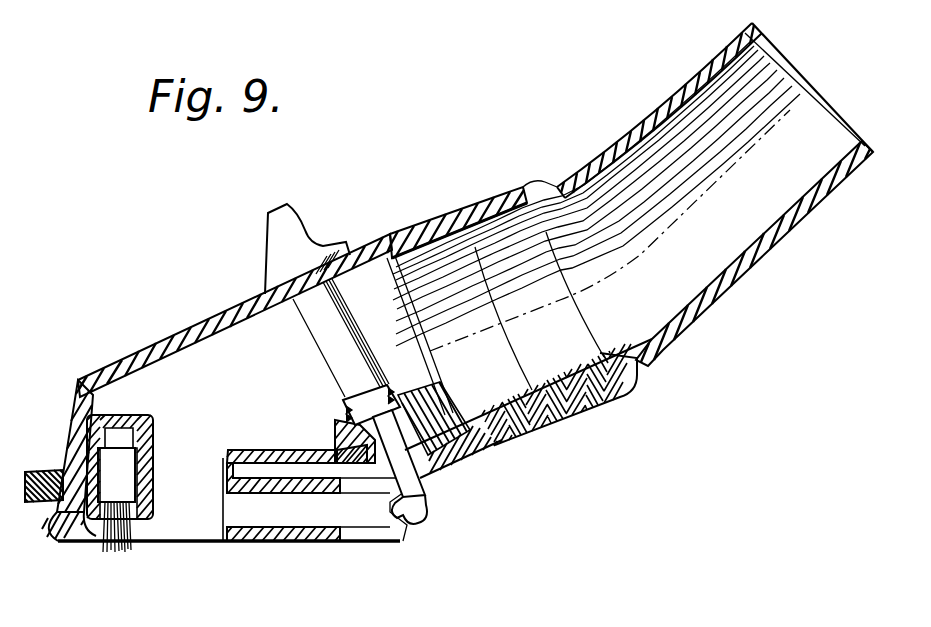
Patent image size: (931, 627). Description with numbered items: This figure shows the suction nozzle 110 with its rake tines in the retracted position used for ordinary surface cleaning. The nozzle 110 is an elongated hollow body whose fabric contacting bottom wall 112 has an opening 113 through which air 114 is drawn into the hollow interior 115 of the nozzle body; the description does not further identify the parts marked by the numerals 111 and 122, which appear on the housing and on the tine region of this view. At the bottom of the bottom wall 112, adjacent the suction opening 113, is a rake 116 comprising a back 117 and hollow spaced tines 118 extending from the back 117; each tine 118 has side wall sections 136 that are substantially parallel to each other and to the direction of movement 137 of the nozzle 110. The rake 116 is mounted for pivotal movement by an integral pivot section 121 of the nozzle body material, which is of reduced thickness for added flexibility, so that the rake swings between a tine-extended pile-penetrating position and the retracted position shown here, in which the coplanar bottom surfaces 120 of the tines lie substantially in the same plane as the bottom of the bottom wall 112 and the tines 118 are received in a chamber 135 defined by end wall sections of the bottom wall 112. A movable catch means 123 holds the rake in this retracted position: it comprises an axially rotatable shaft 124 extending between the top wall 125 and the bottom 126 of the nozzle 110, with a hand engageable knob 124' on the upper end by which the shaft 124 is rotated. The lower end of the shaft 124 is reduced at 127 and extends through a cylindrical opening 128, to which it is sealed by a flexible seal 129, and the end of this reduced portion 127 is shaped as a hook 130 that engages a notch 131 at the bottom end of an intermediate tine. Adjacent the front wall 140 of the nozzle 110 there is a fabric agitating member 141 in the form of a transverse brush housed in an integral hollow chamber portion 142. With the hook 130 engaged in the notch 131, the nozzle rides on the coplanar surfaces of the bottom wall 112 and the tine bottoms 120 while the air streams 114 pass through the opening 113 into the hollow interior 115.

The suction nozzle 110 is at (195, 322).
The housing end wall 111 is at (120, 360).
The bottom wall 112 is at (68, 539).
The opening 113 is at (167, 506).
The air 114 is at (200, 504).
The hollow interior 115 is at (248, 376).
The rake 116 is at (306, 548).
The back 117 is at (215, 462).
The tines 118 is at (312, 545).
The bottom surfaces 120 is at (330, 545).
The integral pivot section 121 is at (231, 455).
The nozzle tube 122 is at (314, 521).
The catch means 123 is at (392, 303).
The shaft 124 is at (323, 323).
The hand engageable knob 124' is at (315, 239).
The top wall 125 is at (234, 305).
The bottom 126 is at (437, 458).
The reduced portion 127 is at (440, 410).
The cylindrical opening 128 is at (410, 415).
The flexible seal 129 is at (340, 423).
The hook 130 is at (428, 512).
The notch 131 is at (405, 540).
The chamber 135 is at (316, 434).
The side wall sections 136 is at (398, 541).
The direction of movement 137 is at (283, 565).
The front wall 140 is at (64, 445).
The fabric agitating member 141 is at (119, 445).
The hollow chamber portion 142 is at (153, 460).